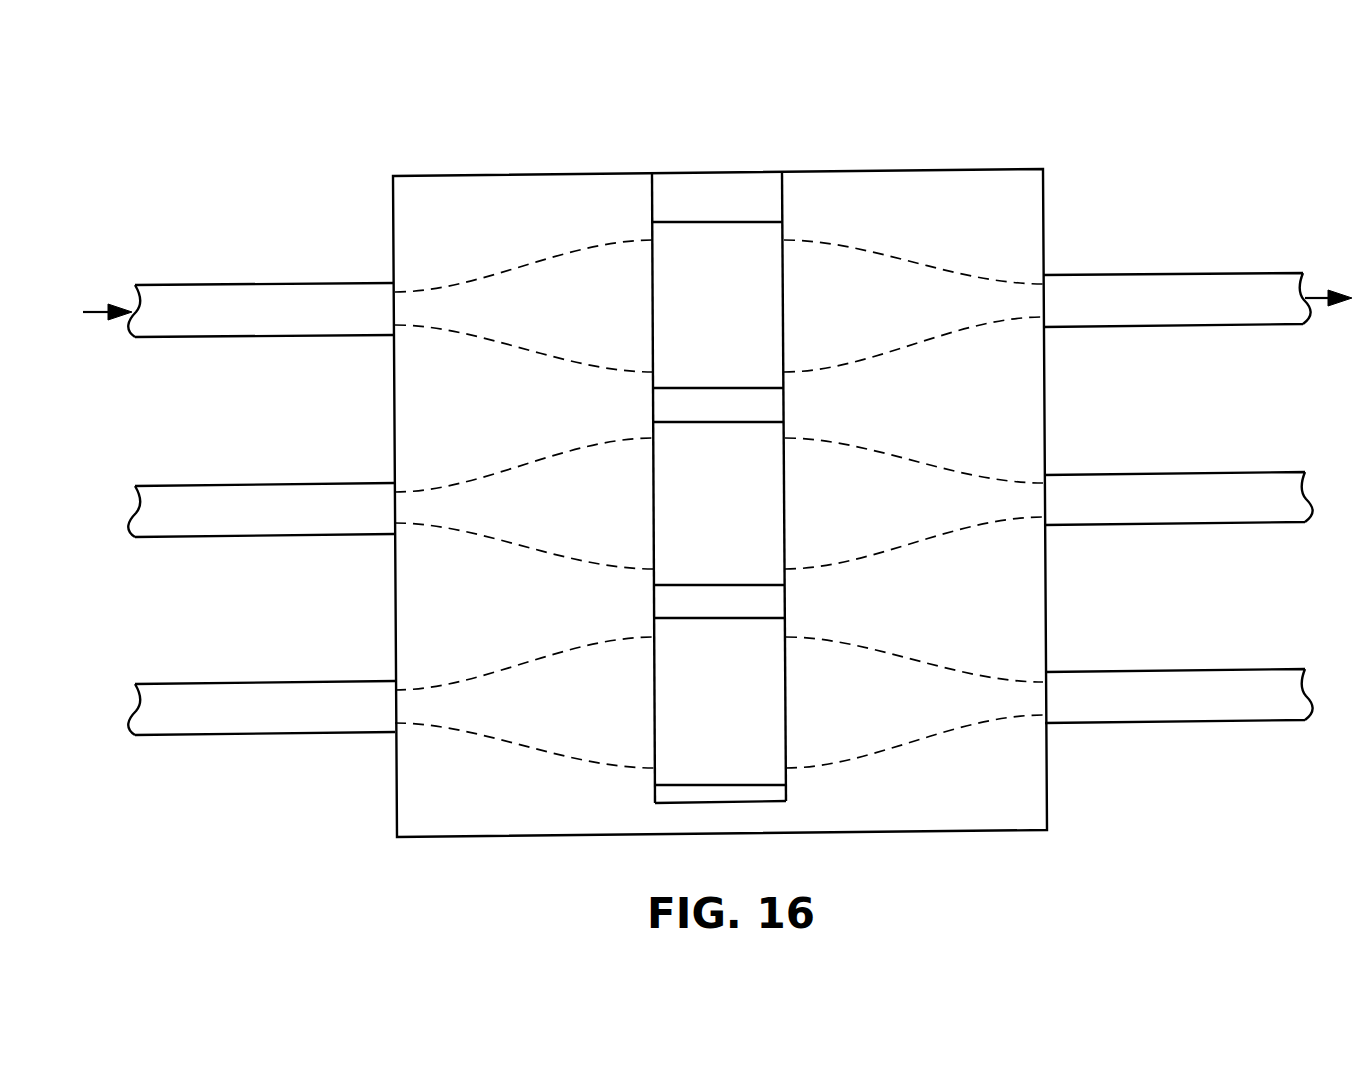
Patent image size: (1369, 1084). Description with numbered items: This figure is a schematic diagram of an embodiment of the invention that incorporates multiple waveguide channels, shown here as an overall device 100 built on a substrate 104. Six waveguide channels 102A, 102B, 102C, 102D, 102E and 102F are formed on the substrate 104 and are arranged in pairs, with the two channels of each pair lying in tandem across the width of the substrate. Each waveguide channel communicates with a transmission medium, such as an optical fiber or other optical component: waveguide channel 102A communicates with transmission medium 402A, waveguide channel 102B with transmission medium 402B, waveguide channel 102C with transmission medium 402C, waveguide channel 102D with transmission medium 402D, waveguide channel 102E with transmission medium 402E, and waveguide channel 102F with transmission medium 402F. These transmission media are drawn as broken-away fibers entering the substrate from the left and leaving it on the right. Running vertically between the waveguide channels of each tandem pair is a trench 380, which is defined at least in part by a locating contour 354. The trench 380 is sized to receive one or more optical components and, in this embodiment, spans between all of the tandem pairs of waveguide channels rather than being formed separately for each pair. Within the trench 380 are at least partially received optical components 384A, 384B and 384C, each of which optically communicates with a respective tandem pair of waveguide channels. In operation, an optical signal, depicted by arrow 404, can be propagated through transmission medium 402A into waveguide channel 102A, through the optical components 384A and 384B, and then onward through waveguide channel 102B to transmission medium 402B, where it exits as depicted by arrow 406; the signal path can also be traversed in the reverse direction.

The optical device 100 is at (333, 151).
The substrate 104 is at (1010, 200).
The trench 380 is at (691, 146).
The locating contour 354 is at (717, 197).
The optical component 384A is at (768, 290).
The optical component 384B is at (768, 490).
The optical component 384C is at (768, 690).
The waveguide channel 102A is at (556, 305).
The waveguide channel 102B is at (880, 303).
The waveguide channel 102C is at (557, 505).
The waveguide channel 102D is at (881, 503).
The waveguide channel 102E is at (558, 703).
The waveguide channel 102F is at (889, 699).
The transmission medium 402A is at (213, 285).
The transmission medium 402B is at (1107, 275).
The transmission medium 402C is at (215, 485).
The transmission medium 402D is at (1108, 475).
The transmission medium 402E is at (215, 683).
The transmission medium 402F is at (1108, 672).
The arrow 404 is at (101, 306).
The arrow 406 is at (1318, 295).